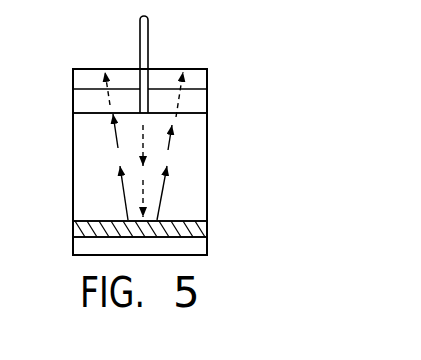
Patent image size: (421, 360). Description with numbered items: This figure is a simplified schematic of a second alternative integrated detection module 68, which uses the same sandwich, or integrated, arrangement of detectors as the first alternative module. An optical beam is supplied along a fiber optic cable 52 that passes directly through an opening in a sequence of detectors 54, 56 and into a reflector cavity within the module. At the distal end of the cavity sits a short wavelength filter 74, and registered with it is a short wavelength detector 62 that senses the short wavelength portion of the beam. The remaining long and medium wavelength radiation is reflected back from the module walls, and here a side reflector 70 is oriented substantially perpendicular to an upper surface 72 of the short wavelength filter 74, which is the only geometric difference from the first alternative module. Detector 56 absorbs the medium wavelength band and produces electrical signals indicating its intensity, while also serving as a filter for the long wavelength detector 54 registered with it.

The fiber optic cable 52 is at (148, 46).
The long wavelength detector 54 is at (207, 78).
The detector 56 is at (207, 101).
The short wavelength detector 62 is at (207, 252).
The second alternative integrated detection module 68 is at (290, 67).
The side reflector 70 is at (205, 157).
The upper surface 72 is at (93, 220).
The short wavelength filter 74 is at (206, 229).